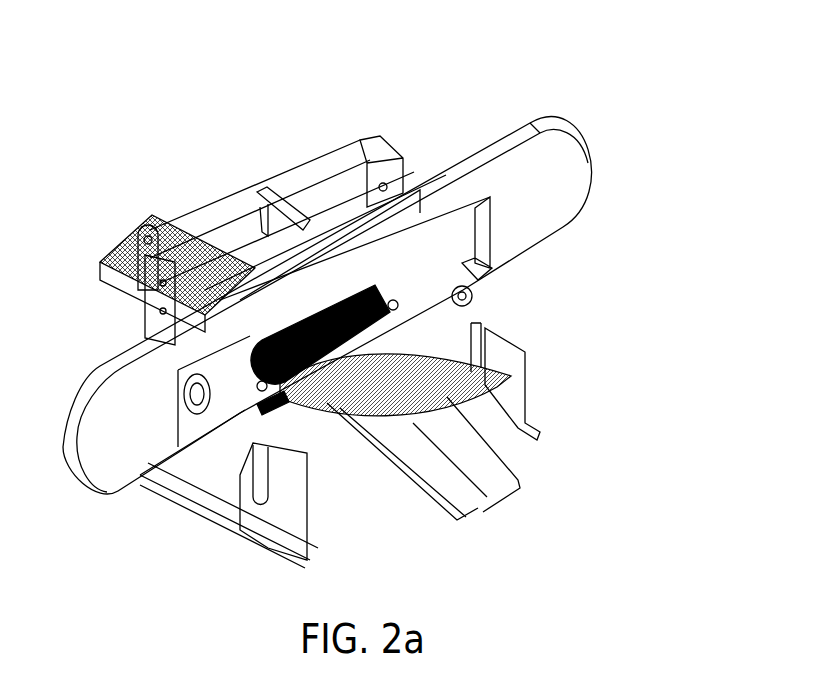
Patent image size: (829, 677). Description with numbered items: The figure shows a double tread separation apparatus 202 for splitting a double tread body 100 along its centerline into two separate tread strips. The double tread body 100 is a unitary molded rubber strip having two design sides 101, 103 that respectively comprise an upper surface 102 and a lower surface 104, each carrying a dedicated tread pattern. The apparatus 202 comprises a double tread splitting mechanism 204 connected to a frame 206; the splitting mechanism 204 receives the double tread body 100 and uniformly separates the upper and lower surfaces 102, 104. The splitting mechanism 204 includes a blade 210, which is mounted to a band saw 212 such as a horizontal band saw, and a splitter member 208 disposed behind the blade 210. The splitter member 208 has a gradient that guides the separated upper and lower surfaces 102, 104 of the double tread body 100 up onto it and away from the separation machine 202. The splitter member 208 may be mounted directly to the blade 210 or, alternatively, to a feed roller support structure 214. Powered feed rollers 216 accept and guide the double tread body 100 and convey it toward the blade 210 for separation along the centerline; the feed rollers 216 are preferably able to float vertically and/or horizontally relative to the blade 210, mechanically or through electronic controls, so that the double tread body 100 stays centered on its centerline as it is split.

The tread body 100 is at (108, 265).
The design side 101 is at (609, 371).
The upper surface 102 is at (508, 382).
The design side 103 is at (531, 476).
The lower surface 104 is at (478, 505).
The double tread separation apparatus 202 is at (617, 223).
The double tread splitting mechanism 204 is at (441, 327).
The frame 206 is at (260, 507).
The splitter member 208 is at (310, 410).
The blade 210 is at (450, 288).
The band saw 212 is at (565, 160).
The feed roller support structure 214 is at (394, 300).
The feed rollers 216 is at (273, 347).